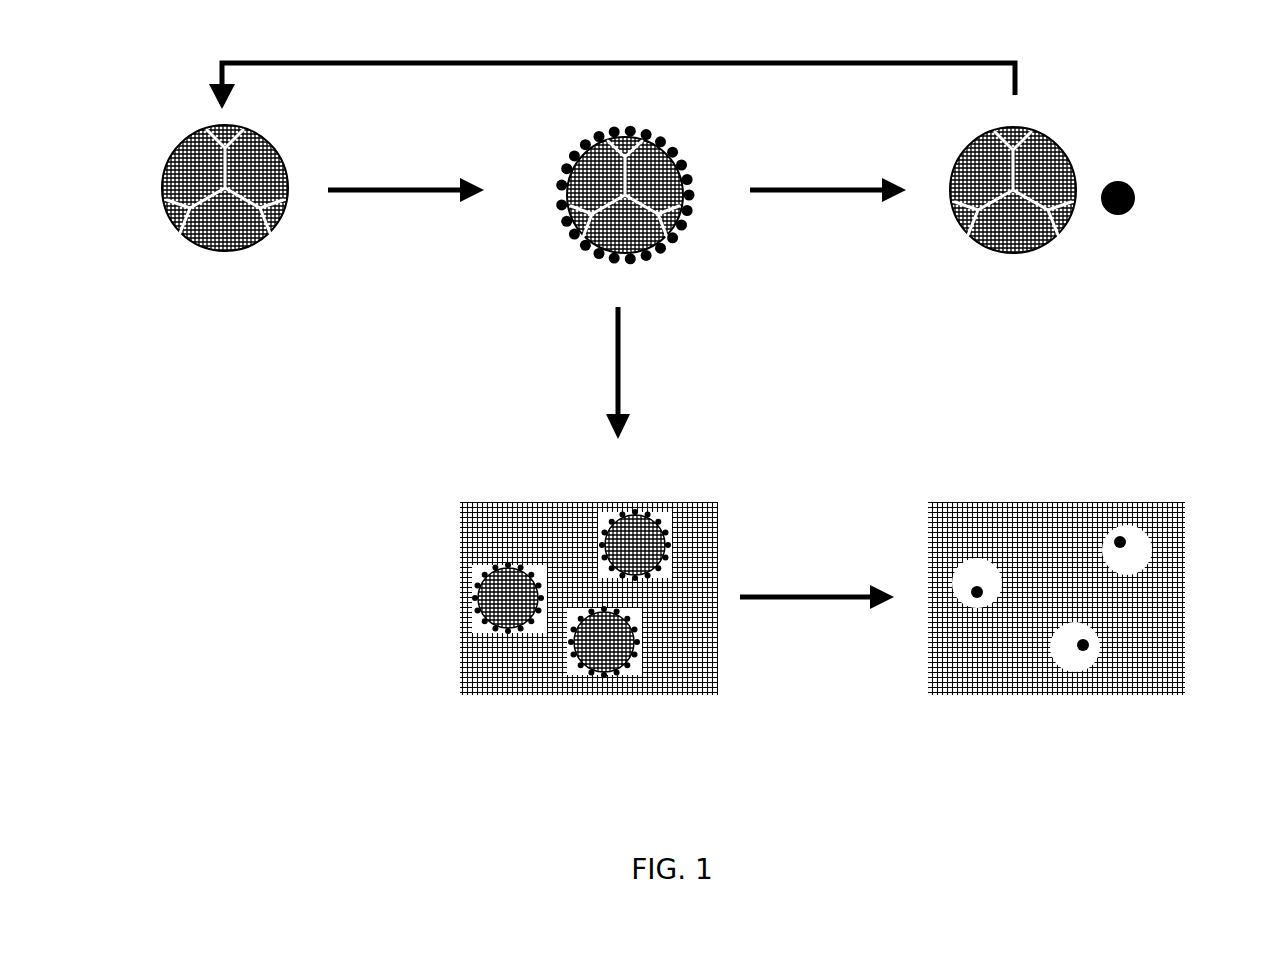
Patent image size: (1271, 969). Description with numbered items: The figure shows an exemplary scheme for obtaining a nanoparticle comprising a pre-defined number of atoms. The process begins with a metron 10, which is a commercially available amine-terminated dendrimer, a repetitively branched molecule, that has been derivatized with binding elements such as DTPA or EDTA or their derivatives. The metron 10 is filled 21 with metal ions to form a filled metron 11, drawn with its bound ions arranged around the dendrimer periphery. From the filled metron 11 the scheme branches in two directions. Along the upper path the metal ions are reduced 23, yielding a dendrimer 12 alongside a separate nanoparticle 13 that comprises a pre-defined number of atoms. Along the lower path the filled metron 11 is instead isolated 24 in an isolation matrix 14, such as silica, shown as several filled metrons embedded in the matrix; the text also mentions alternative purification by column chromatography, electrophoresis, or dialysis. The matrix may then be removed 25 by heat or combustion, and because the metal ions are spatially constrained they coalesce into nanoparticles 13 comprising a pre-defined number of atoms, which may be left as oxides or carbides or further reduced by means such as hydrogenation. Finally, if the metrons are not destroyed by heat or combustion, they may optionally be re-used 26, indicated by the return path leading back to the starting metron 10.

The metron 10 is at (197, 255).
The filled metron 11 is at (550, 243).
The dendrimer after release 12 is at (962, 248).
The nanoparticle comprising a pre-defined number of atoms 13 is at (1145, 185).
The isolation matrix 14 is at (485, 540).
The filling step 21 is at (406, 178).
The reducing step 23 is at (828, 178).
The isolating step 24 is at (630, 373).
The matrix removal step 25 is at (817, 581).
The re-use step 26 is at (612, 65).